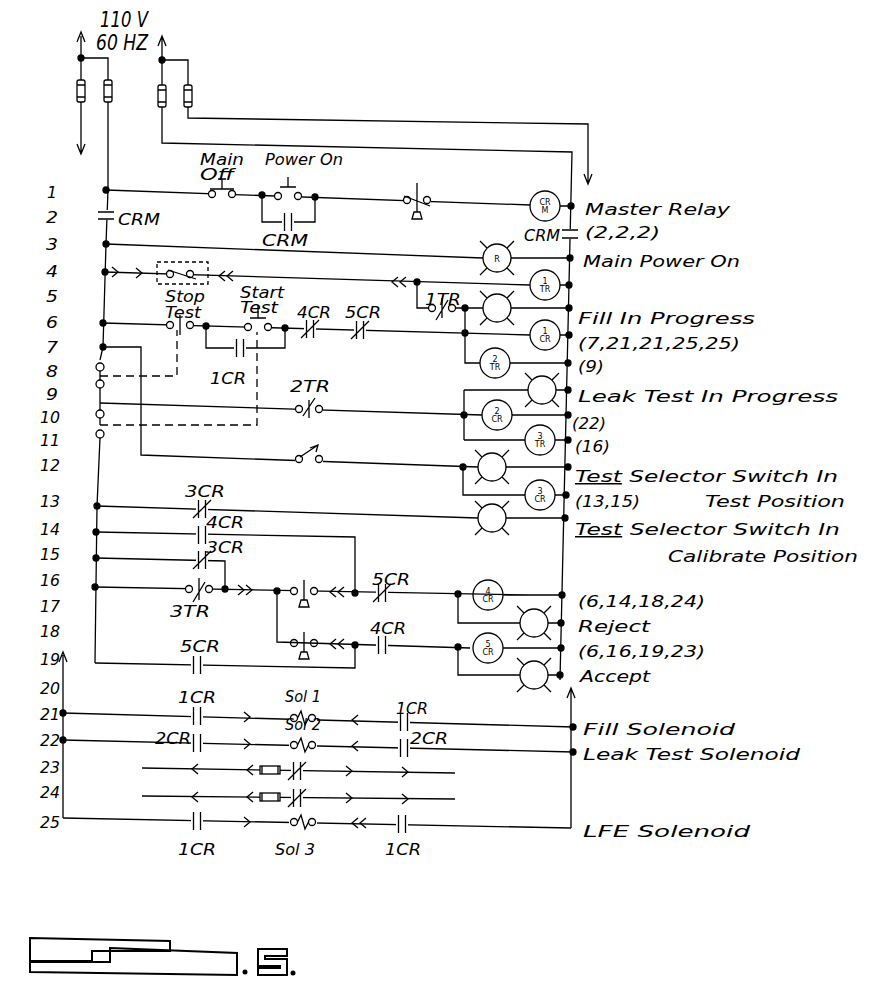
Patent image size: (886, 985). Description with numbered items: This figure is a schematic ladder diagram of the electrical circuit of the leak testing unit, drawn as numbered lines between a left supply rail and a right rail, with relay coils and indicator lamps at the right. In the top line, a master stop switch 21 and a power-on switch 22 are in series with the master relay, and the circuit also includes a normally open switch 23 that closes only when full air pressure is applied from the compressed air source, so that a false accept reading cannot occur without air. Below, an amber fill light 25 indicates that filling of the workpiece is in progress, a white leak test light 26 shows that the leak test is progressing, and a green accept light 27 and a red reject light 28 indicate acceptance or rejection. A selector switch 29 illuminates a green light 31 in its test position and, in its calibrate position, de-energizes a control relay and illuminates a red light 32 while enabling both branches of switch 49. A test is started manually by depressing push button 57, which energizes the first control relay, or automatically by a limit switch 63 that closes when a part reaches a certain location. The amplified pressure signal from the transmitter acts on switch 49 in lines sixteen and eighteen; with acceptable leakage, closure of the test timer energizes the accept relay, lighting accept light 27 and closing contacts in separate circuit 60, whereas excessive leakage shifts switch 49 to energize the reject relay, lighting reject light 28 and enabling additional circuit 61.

The master stop switch 21 is at (222, 200).
The power-on switch 22 is at (296, 187).
The normally open switch 23 is at (428, 208).
The amber fill light 25 is at (480, 298).
The white leak test light 26 is at (528, 388).
The green accept light 27 is at (534, 689).
The red reject light 28 is at (536, 609).
The selector switch 29 is at (320, 466).
The green light 31 is at (478, 474).
The red light 32 is at (492, 532).
The switch 49 is at (300, 612).
The push button 57 is at (262, 317).
The separate circuit 60 is at (455, 773).
The additional circuit 61 is at (455, 799).
The limit switch 63 is at (158, 283).